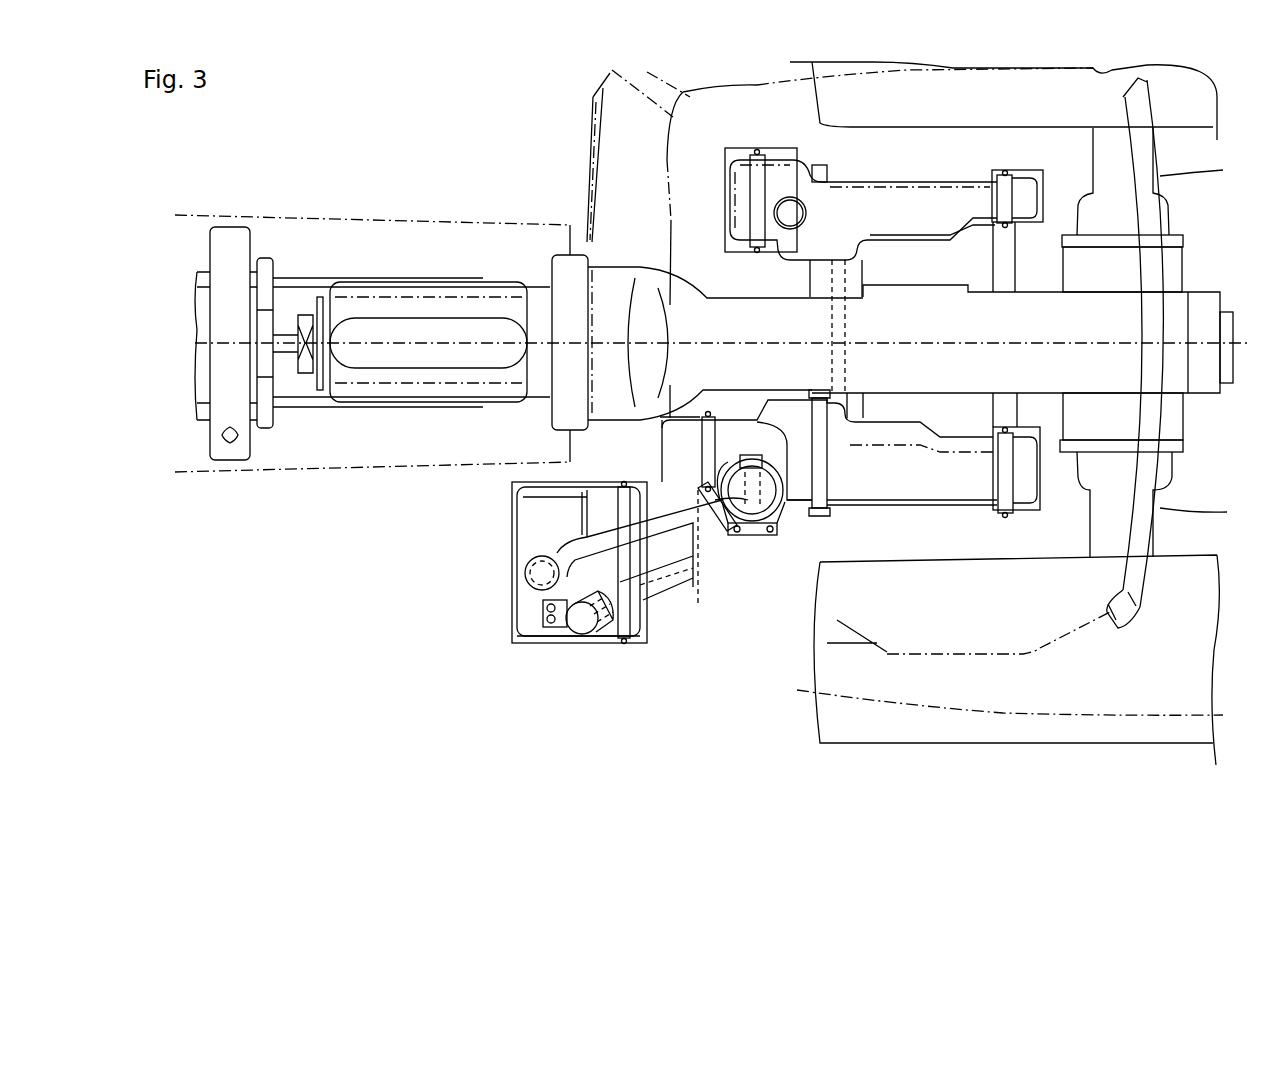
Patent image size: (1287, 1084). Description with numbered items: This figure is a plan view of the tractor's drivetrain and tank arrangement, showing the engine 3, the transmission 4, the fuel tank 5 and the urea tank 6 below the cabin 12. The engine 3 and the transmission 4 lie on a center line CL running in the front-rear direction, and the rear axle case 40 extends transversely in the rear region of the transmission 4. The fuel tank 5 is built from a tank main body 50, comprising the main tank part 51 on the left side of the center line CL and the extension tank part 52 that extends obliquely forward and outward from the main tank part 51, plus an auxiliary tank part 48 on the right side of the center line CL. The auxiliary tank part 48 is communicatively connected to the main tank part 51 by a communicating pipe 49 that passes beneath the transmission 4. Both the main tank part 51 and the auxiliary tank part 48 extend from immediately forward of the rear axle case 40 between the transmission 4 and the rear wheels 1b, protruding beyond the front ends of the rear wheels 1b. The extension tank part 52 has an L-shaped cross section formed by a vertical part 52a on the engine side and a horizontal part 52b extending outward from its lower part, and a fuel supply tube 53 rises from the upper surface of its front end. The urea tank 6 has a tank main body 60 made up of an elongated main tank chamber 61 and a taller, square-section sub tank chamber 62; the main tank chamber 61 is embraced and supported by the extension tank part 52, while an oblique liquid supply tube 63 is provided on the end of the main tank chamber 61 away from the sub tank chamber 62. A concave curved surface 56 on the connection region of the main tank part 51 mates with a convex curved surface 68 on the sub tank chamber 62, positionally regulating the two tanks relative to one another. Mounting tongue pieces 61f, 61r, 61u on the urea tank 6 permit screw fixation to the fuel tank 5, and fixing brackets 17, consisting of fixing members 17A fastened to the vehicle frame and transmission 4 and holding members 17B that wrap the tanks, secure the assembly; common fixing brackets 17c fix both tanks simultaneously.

The rear wheels 1b is at (820, 100).
The engine 3 is at (428, 303).
The transmission 4 is at (723, 297).
The fuel tank 5 is at (943, 424).
The urea tank 6 is at (678, 596).
The cabin 12 is at (585, 147).
The fixing brackets 17 is at (782, 412).
The fixing members 17A is at (500, 700).
The holding members 17B is at (757, 252).
The common fixing brackets 17c is at (615, 637).
The rear axle case 40 is at (1205, 257).
The auxiliary tank part 48 is at (890, 187).
The communicating pipe 49 is at (860, 270).
The tank main body 50 is at (699, 536).
The main tank part 51 is at (892, 508).
The extension tank part 52 is at (524, 577).
The vertical part 52a is at (570, 537).
The horizontal part 52b is at (537, 643).
The fuel supply tube 53 is at (526, 585).
The curved surface 56 is at (747, 467).
The tank main body 60 is at (713, 599).
The main tank chamber 61 is at (713, 603).
The mounting tongue piece 61f is at (542, 614).
The mounting tongue piece 61r is at (790, 513).
The mounting tongue piece 61u is at (748, 537).
The sub tank chamber 62 is at (762, 537).
The liquid supply tube 63 is at (578, 630).
The curved surface 68 is at (778, 487).
The center line CL is at (907, 340).